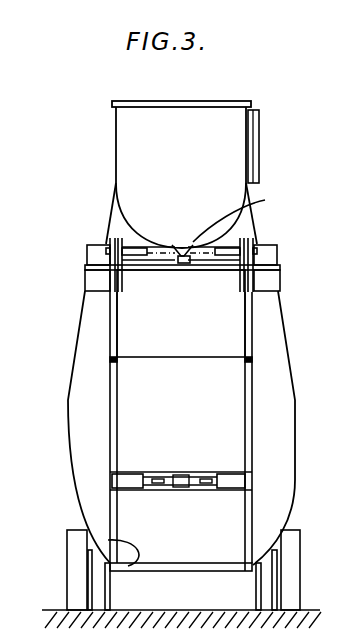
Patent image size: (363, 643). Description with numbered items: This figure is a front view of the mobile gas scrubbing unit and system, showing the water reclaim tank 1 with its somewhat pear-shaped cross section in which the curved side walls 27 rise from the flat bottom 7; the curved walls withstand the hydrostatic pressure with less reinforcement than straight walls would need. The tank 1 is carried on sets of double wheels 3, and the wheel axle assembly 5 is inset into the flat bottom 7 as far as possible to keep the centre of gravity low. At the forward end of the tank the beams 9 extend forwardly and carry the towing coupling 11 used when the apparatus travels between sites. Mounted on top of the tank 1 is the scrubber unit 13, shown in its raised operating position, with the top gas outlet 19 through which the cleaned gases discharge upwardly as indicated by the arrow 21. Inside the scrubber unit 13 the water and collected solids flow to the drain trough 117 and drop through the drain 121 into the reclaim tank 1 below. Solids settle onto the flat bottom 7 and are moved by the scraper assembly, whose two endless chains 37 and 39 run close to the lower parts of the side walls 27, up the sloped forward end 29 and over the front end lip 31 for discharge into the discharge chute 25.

The water reclaim tank 1 is at (277, 373).
The double wheels 3 is at (80, 597).
The wheel axle assembly 5 is at (133, 567).
The flat bottom 7 is at (110, 541).
The beams 9 is at (130, 476).
The towing coupling 11 is at (187, 491).
The scrubber unit 13 is at (227, 162).
The top gas outlet 19 is at (243, 86).
The arrow 21 is at (190, 56).
The discharge chute 25 is at (197, 334).
The side walls 27 is at (68, 397).
The forward end 29 is at (265, 391).
The front end lip 31 is at (207, 272).
The endless chain 37 is at (253, 421).
The endless chain 39 is at (112, 409).
The drain trough 117 is at (251, 213).
The drain 121 is at (186, 262).